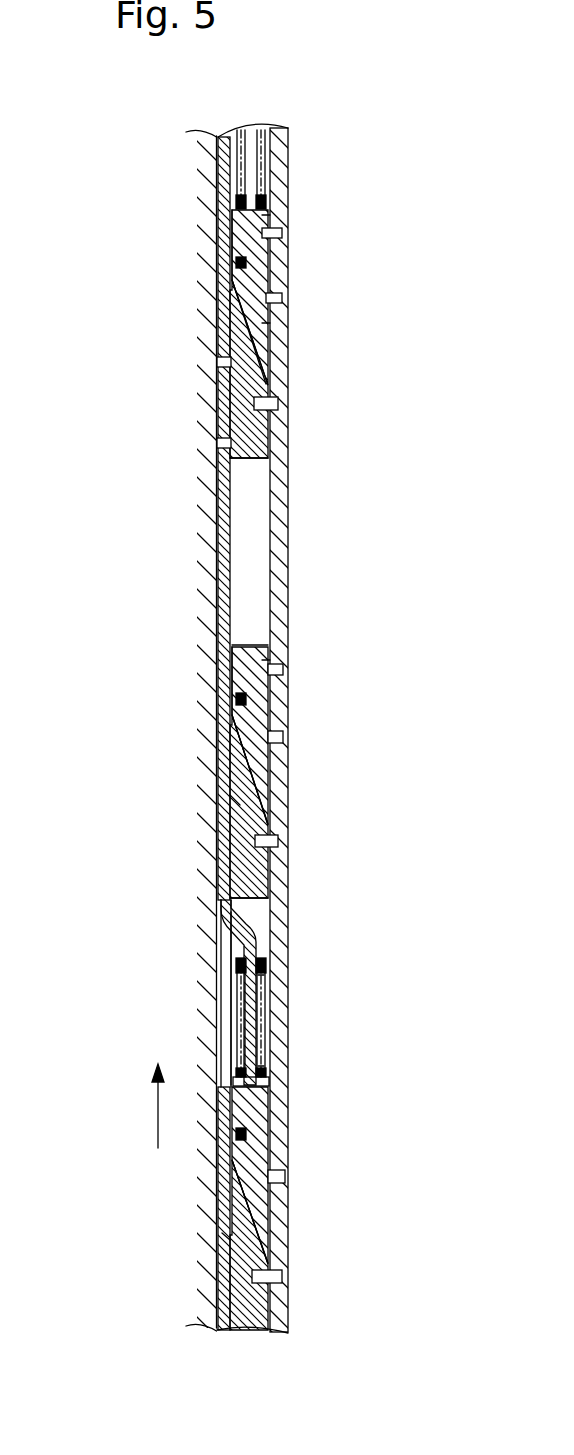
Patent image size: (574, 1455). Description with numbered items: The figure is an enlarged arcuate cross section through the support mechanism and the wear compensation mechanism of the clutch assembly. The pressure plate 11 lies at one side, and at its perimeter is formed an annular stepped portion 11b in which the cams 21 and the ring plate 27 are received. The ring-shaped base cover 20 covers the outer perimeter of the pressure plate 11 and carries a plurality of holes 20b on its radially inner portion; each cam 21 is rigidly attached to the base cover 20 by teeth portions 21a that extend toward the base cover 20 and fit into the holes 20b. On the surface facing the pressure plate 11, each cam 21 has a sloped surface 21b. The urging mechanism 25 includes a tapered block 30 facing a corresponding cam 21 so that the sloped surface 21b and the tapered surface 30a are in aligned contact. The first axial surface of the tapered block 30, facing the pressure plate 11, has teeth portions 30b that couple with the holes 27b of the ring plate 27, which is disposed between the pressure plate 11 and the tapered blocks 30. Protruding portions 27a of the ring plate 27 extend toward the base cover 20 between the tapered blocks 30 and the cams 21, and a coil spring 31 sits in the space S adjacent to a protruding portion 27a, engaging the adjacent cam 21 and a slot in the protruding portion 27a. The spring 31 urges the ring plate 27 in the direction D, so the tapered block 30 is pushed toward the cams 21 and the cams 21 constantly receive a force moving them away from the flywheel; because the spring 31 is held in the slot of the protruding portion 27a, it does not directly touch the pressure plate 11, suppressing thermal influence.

The pressure plate 11 is at (214, 528).
The annular stepped portion 11b is at (236, 636).
The base cover 20 is at (288, 548).
The holes 20b is at (288, 235).
The cam 21 is at (262, 268).
The teeth portions 21a is at (288, 212).
The sloped surface 21b is at (228, 305).
The urging mechanism 25 is at (262, 941).
The ring plate 27 is at (226, 190).
The protruding portions 27a is at (272, 152).
The holes 27b is at (238, 802).
The tapered block 30 is at (220, 408).
The tapered surface 30a is at (265, 382).
The teeth portions 30b is at (220, 360).
The spring 31 is at (267, 990).
The space S is at (240, 952).
The direction D is at (143, 1106).